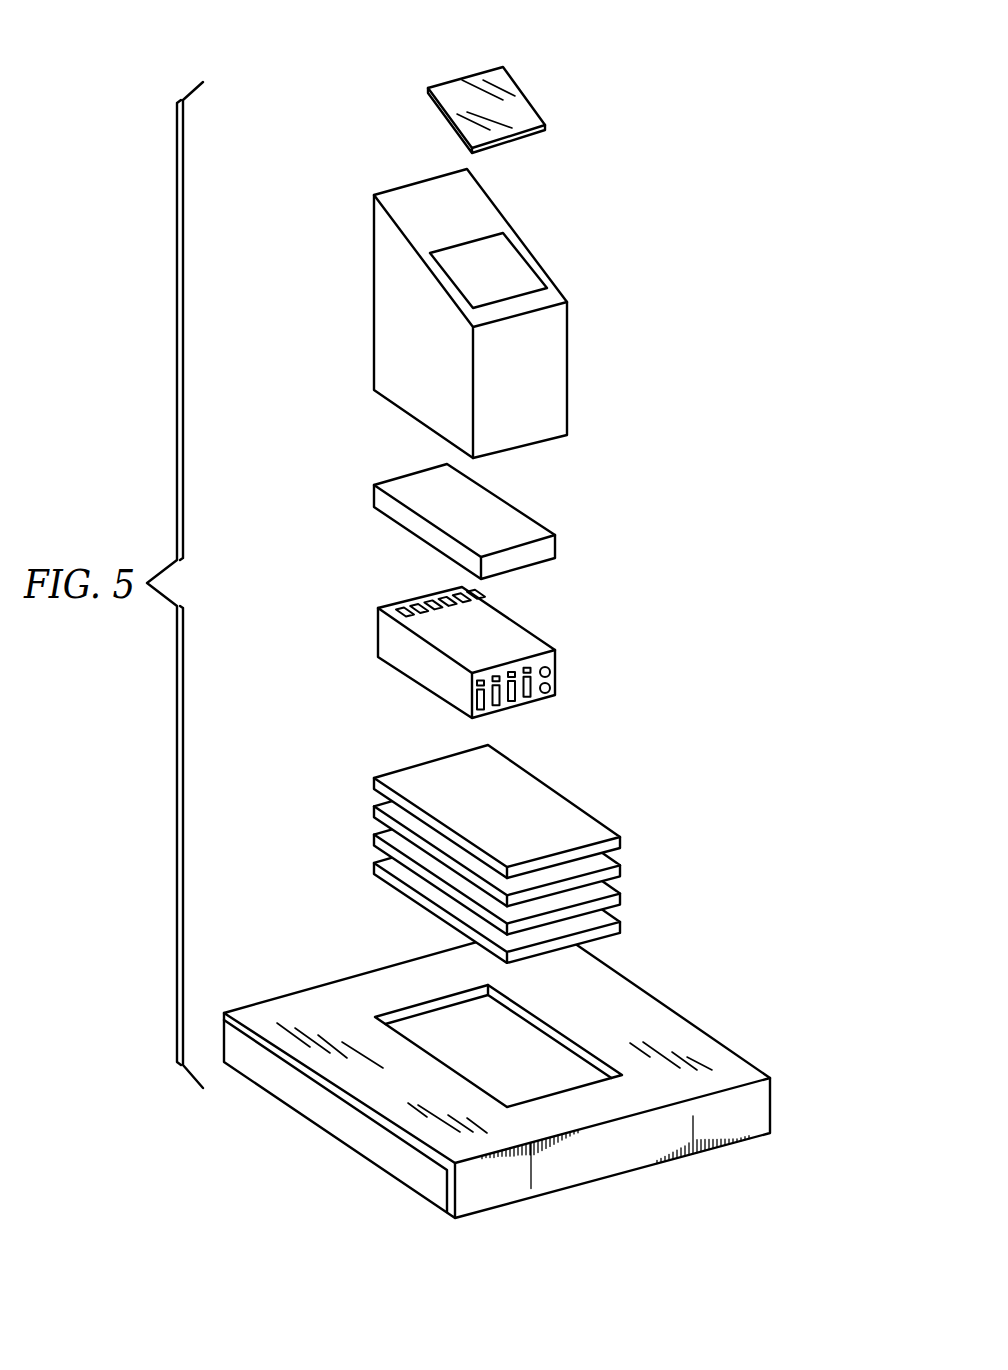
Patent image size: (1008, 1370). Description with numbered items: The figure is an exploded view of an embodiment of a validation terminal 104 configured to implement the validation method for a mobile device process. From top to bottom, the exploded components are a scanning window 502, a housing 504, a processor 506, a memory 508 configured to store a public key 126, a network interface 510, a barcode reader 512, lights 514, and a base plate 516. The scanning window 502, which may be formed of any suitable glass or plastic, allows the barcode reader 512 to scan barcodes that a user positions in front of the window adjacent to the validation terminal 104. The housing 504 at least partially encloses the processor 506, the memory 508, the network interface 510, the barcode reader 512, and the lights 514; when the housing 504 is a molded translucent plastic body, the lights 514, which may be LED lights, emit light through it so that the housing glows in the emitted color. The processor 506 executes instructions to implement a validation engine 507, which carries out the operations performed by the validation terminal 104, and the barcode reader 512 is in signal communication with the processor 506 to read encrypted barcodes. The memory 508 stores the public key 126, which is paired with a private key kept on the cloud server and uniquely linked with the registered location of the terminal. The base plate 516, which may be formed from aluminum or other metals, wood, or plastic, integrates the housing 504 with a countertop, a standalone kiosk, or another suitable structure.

The validation terminal 104 is at (653, 14).
The scanning window 502 is at (540, 108).
The housing 504 is at (570, 368).
The processor 506 is at (530, 522).
The validation engine 507 is at (522, 510).
The memory 508 is at (549, 510).
The network interface 510 is at (577, 510).
The public key 126 is at (587, 510).
The barcode reader 512 is at (530, 630).
The lights 514 is at (637, 830).
The base plate 516 is at (698, 1027).